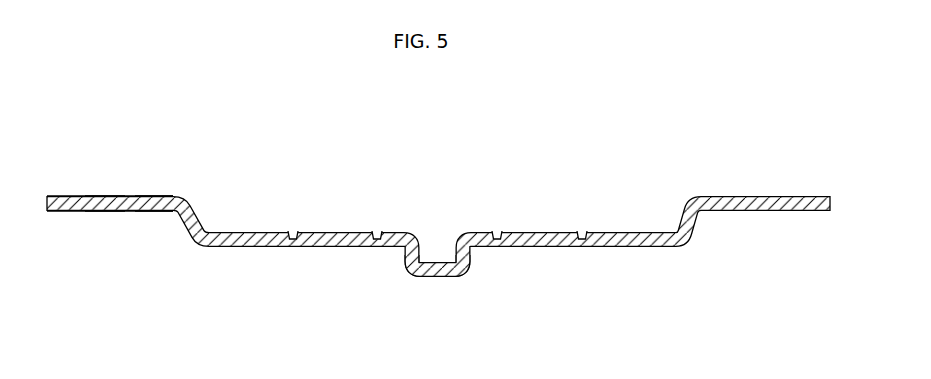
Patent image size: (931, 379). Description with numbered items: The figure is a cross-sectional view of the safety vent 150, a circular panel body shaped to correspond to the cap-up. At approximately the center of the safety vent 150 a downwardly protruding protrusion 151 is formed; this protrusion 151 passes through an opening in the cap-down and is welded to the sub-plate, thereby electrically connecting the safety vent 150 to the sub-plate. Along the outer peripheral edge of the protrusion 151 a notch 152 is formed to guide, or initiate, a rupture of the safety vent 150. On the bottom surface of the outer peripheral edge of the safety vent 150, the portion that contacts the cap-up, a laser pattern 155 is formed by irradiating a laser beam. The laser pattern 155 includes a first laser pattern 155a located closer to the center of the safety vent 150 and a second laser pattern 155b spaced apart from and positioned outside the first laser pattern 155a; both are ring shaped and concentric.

The safety vent 150 is at (758, 195).
The protrusion 151 is at (435, 278).
The notch 152 is at (498, 231).
The laser pattern 155 is at (177, 138).
The first laser pattern 155a is at (150, 208).
The second laser pattern 155b is at (103, 208).